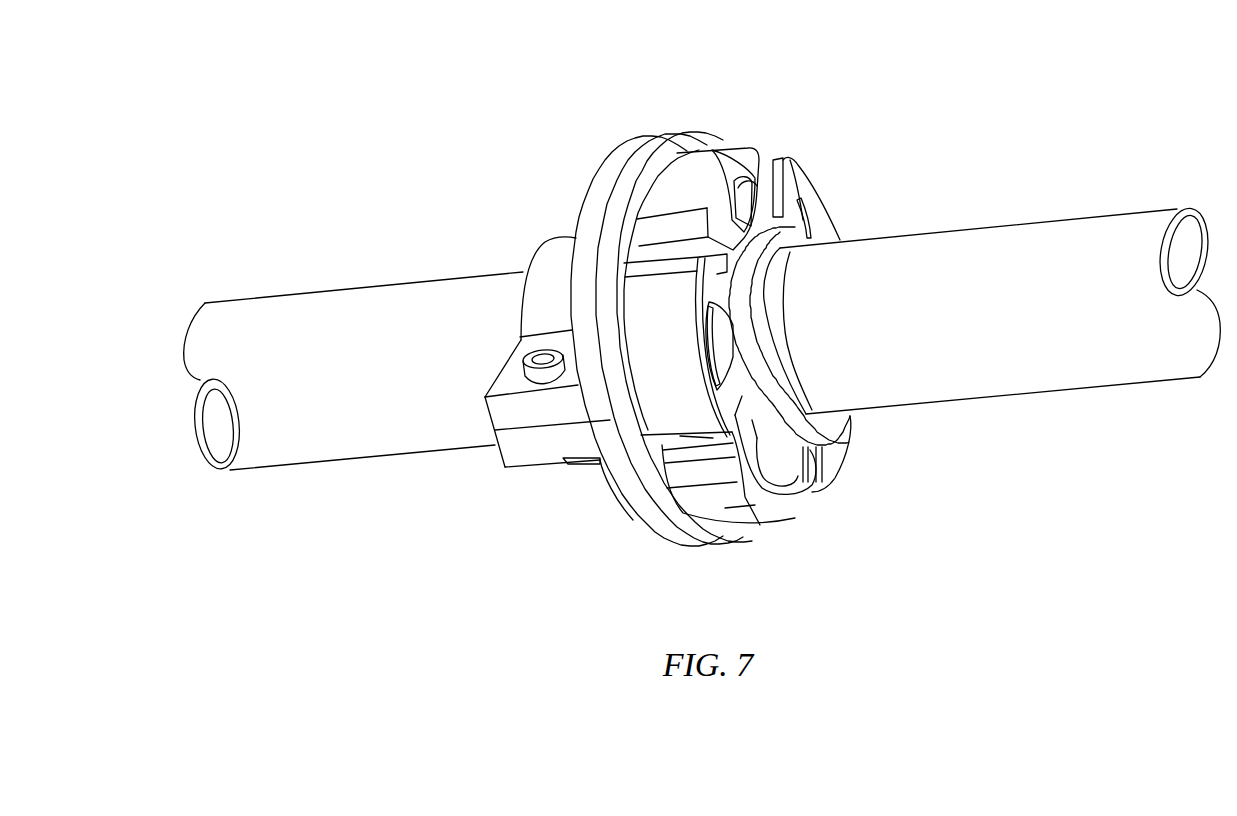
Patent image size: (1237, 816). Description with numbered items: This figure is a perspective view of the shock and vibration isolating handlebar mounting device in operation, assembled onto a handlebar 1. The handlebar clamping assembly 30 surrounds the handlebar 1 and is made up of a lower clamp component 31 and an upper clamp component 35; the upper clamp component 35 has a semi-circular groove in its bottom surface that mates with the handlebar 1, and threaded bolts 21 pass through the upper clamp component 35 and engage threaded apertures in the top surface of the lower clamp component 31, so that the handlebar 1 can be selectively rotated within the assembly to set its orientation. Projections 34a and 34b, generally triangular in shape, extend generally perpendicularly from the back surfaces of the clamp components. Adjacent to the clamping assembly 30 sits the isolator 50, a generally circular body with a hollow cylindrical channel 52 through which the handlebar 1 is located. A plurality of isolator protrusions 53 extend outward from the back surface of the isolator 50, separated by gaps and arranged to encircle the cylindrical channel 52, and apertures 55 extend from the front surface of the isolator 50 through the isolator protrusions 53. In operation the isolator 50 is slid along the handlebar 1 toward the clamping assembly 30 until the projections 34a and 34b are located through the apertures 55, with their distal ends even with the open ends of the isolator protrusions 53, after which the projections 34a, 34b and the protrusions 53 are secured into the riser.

The handlebar 1 is at (364, 308).
The threaded bolts 21 is at (522, 354).
The handlebar clamping assembly 30 is at (603, 141).
The lower clamp component 31 is at (643, 554).
The projection 34a is at (778, 482).
The projection 34b is at (747, 192).
The upper clamp component 35 is at (580, 184).
The isolator 50 is at (744, 133).
The hollow cylindrical channel 52 is at (820, 295).
The isolator protrusions 53 is at (688, 172).
The apertures 55 is at (803, 490).